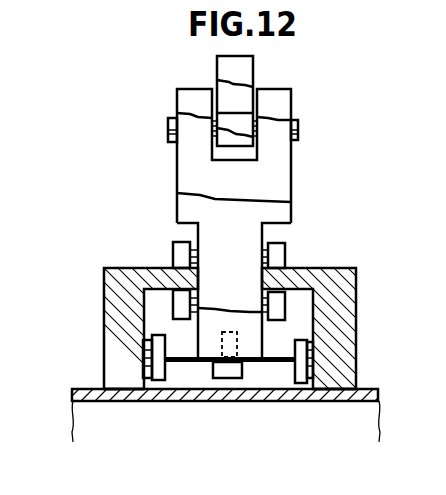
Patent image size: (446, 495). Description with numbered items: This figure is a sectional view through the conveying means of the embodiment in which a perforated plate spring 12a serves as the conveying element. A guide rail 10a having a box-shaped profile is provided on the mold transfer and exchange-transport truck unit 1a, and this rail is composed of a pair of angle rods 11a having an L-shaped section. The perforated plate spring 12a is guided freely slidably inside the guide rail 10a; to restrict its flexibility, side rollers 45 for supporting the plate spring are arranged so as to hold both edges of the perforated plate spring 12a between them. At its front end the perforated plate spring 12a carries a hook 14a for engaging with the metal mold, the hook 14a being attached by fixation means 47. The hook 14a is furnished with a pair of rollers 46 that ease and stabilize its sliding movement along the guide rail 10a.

The mold transfer and exchange-transport truck unit 1a is at (378, 390).
The guide rail 10a is at (343, 268).
The angle rods 11a is at (105, 383).
The perforated plate spring 12a is at (277, 355).
The hook 14a is at (293, 113).
The side rollers 45 is at (143, 345).
The rollers 46 is at (180, 306).
The fixation means 47 is at (230, 378).